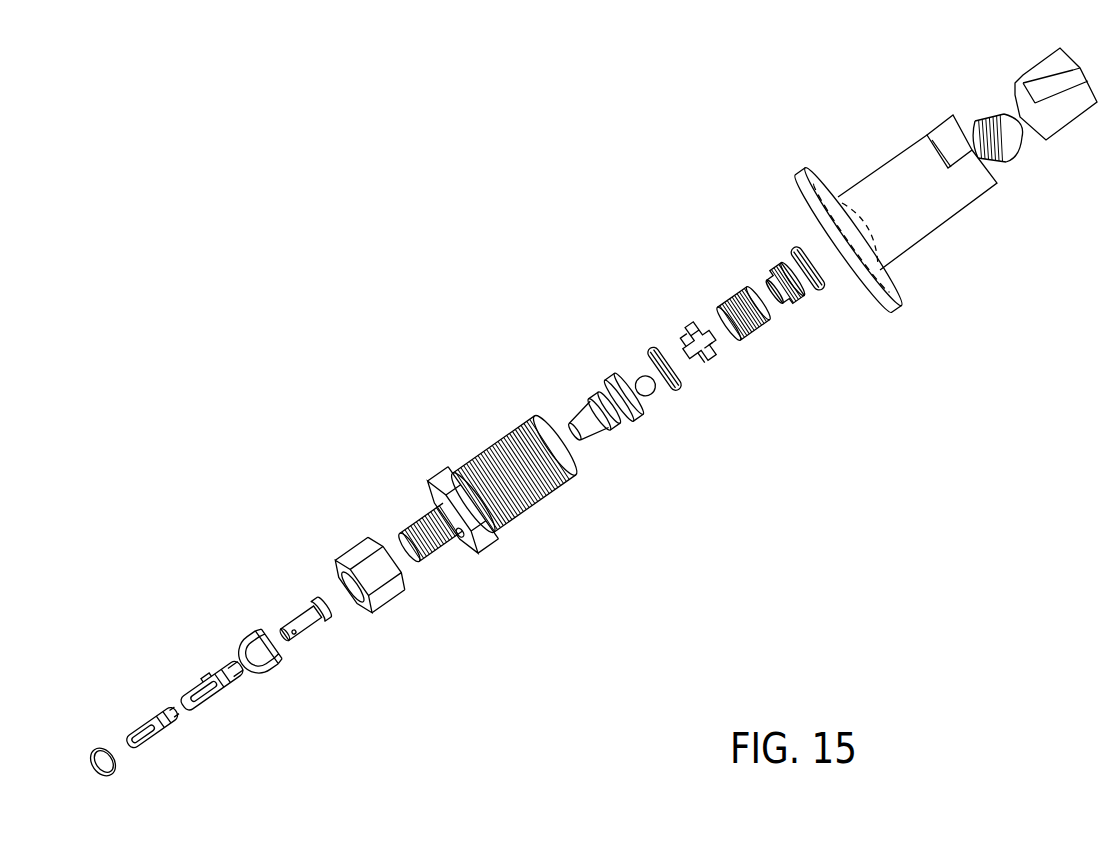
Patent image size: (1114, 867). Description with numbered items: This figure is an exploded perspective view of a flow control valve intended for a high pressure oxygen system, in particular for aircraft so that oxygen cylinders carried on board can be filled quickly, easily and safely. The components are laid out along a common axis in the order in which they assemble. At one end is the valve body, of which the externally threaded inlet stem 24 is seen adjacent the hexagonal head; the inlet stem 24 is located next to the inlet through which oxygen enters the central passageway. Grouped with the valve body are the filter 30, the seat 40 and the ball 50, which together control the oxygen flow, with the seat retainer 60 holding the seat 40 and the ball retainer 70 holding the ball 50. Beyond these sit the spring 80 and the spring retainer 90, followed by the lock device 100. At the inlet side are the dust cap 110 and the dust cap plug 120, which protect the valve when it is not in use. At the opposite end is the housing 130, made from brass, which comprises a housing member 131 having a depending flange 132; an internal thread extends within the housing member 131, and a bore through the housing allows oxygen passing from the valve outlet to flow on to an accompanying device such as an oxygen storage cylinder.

The inlet stem 24 is at (418, 518).
The filter 30 is at (578, 410).
The seat 40 is at (610, 378).
The ball 50 is at (658, 400).
The seat retainer 60 is at (648, 347).
The ball retainer 70 is at (717, 377).
The spring 80 is at (728, 302).
The spring retainer 90 is at (770, 263).
The lock device 100 is at (828, 305).
The dust cap 110 is at (340, 558).
The dust cap plug 120 is at (293, 613).
The housing 130 is at (953, 138).
The housing member 131 is at (908, 215).
The flange 132 is at (882, 320).